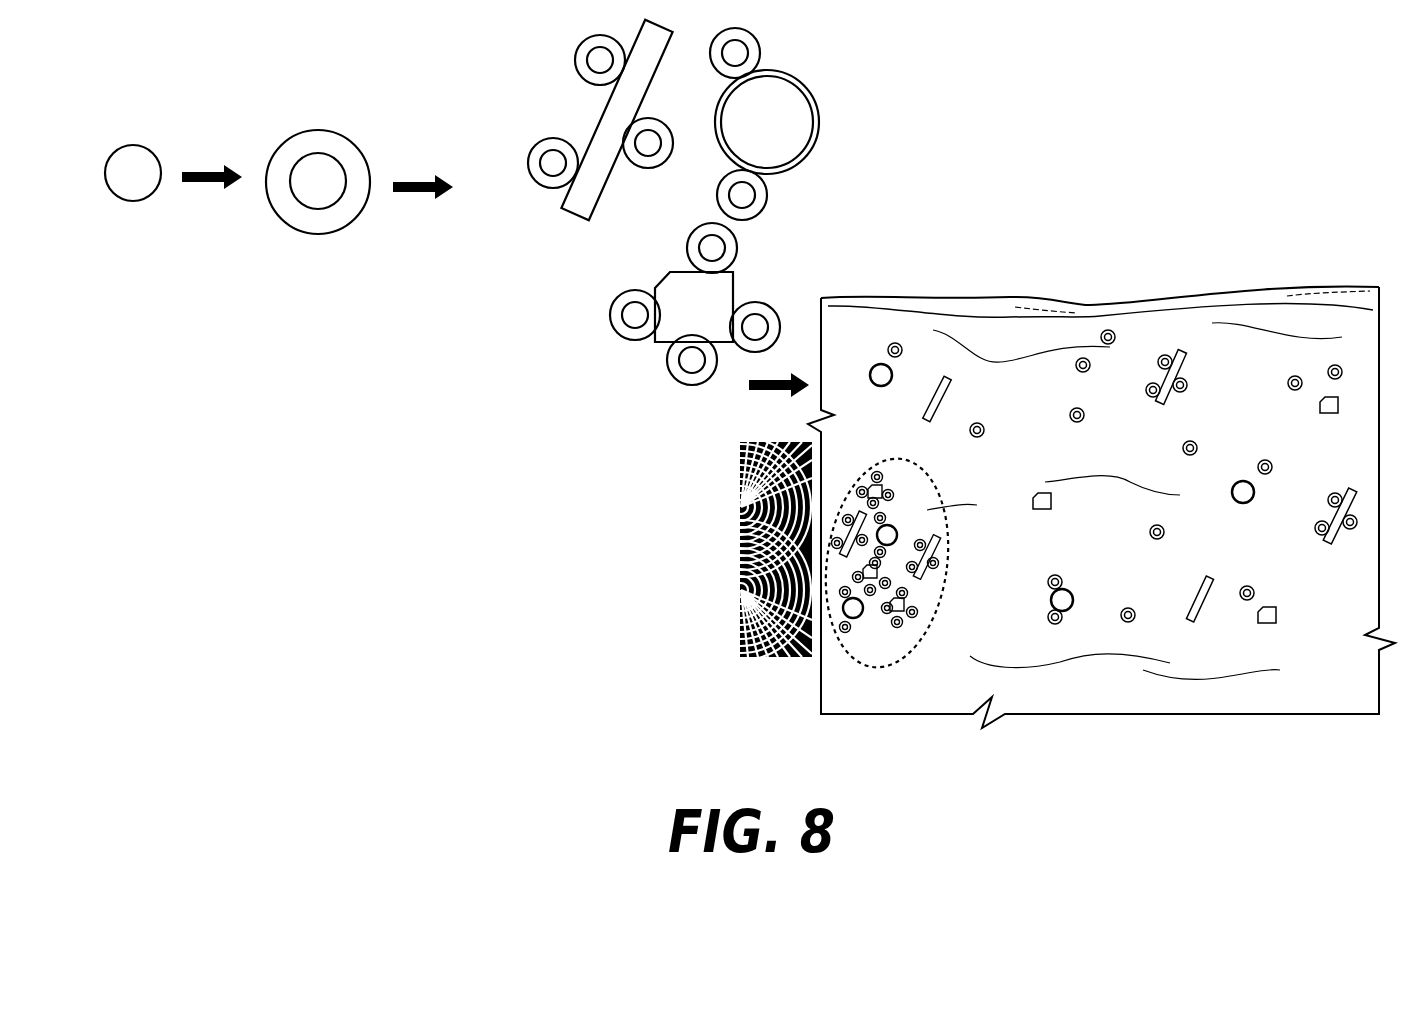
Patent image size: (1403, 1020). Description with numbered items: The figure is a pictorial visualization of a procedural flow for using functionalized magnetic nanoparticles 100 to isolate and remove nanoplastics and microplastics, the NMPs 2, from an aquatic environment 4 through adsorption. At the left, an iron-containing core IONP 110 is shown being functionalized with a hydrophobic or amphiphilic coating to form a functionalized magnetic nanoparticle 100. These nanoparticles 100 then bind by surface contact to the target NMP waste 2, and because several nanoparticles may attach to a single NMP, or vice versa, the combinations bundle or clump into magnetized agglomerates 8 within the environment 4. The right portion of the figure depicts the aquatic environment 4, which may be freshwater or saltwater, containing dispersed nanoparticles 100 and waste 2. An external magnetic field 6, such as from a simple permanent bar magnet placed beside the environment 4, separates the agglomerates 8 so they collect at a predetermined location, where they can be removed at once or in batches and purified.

The IONPs 110 is at (308, 168).
The functionalized magnetic nanoparticles 100 is at (522, 123).
The NMPs 2 is at (868, 488).
The external magnetic field 6 is at (760, 463).
The aquatic environment 4 is at (840, 687).
The magnetized agglomerates 8 is at (893, 686).